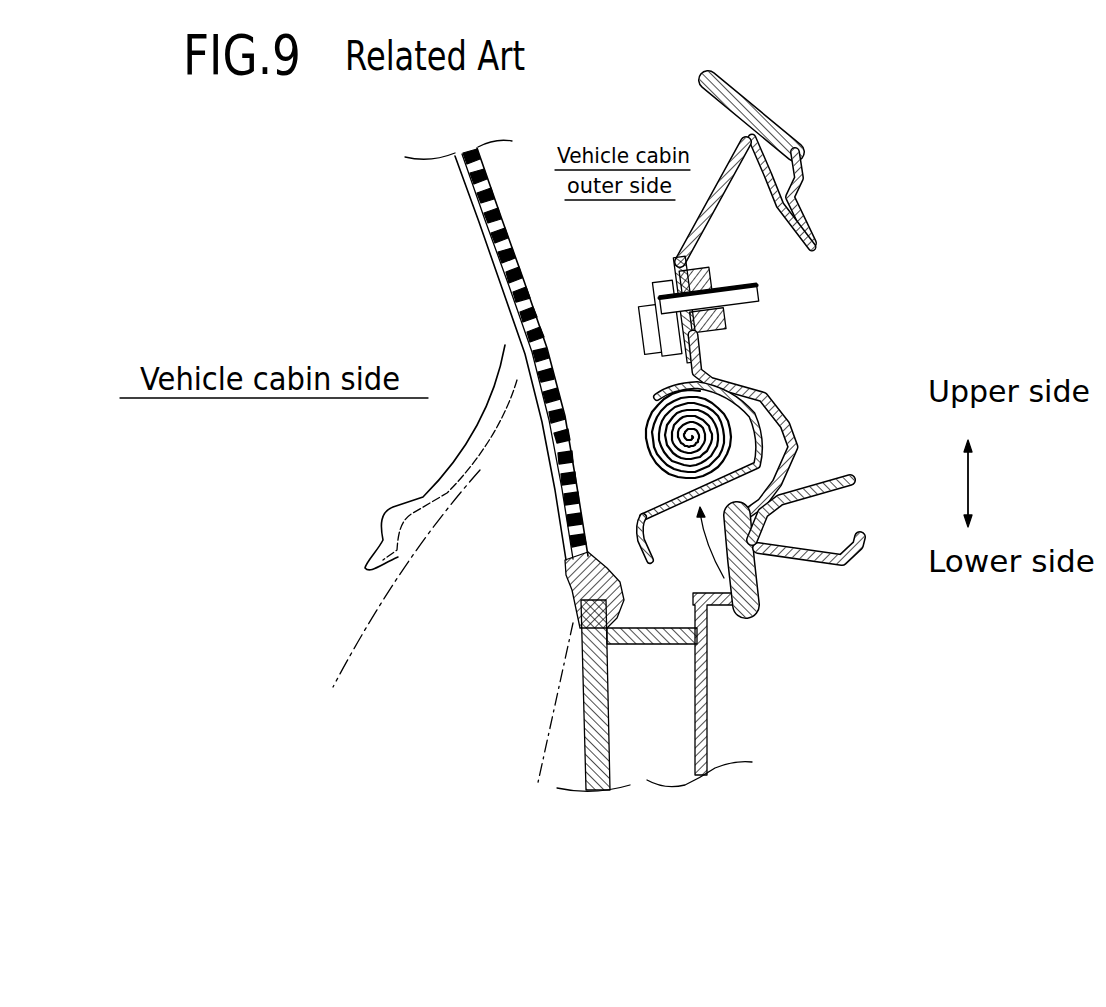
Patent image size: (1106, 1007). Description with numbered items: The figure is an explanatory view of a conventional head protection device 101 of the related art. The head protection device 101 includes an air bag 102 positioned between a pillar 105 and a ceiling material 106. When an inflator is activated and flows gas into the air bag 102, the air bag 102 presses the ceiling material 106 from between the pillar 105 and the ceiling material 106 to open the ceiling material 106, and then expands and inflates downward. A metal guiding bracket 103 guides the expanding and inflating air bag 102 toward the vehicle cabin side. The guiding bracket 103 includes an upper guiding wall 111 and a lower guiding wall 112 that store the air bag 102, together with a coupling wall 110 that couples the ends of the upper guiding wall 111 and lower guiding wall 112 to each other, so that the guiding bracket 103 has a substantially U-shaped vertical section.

The head protection device 101 is at (855, 279).
The air bag 102 is at (640, 426).
The guiding bracket 103 is at (756, 605).
The pillar 105 is at (576, 690).
The ceiling material 106 is at (382, 501).
The coupling wall 110 is at (757, 420).
The upper guiding wall 111 is at (783, 487).
The lower guiding wall 112 is at (695, 350).